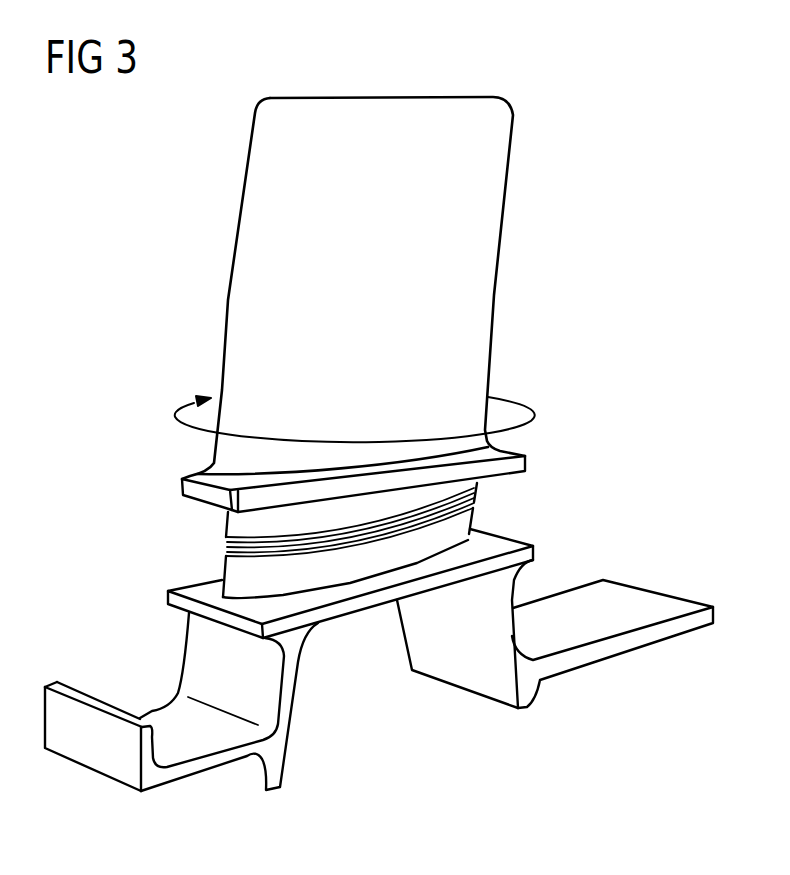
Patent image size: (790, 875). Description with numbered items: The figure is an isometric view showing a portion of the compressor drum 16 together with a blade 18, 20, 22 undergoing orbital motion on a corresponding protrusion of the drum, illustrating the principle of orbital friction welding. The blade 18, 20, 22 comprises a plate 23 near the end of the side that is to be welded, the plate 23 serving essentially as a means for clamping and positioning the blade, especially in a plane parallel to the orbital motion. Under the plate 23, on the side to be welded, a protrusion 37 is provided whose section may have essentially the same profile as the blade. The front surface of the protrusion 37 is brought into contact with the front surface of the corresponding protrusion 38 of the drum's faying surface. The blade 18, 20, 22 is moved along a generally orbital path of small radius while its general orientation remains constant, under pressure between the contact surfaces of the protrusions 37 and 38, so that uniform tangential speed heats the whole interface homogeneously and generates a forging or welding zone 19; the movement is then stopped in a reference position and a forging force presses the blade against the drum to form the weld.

The drum 16 is at (155, 653).
The blade 18 is at (334, 238).
The forging or welding zone 19 is at (477, 500).
The blade 20 is at (378, 238).
The blade 22 is at (422, 238).
The plate 23 is at (193, 490).
The protrusion 37 is at (233, 520).
The protrusion 38 is at (232, 573).